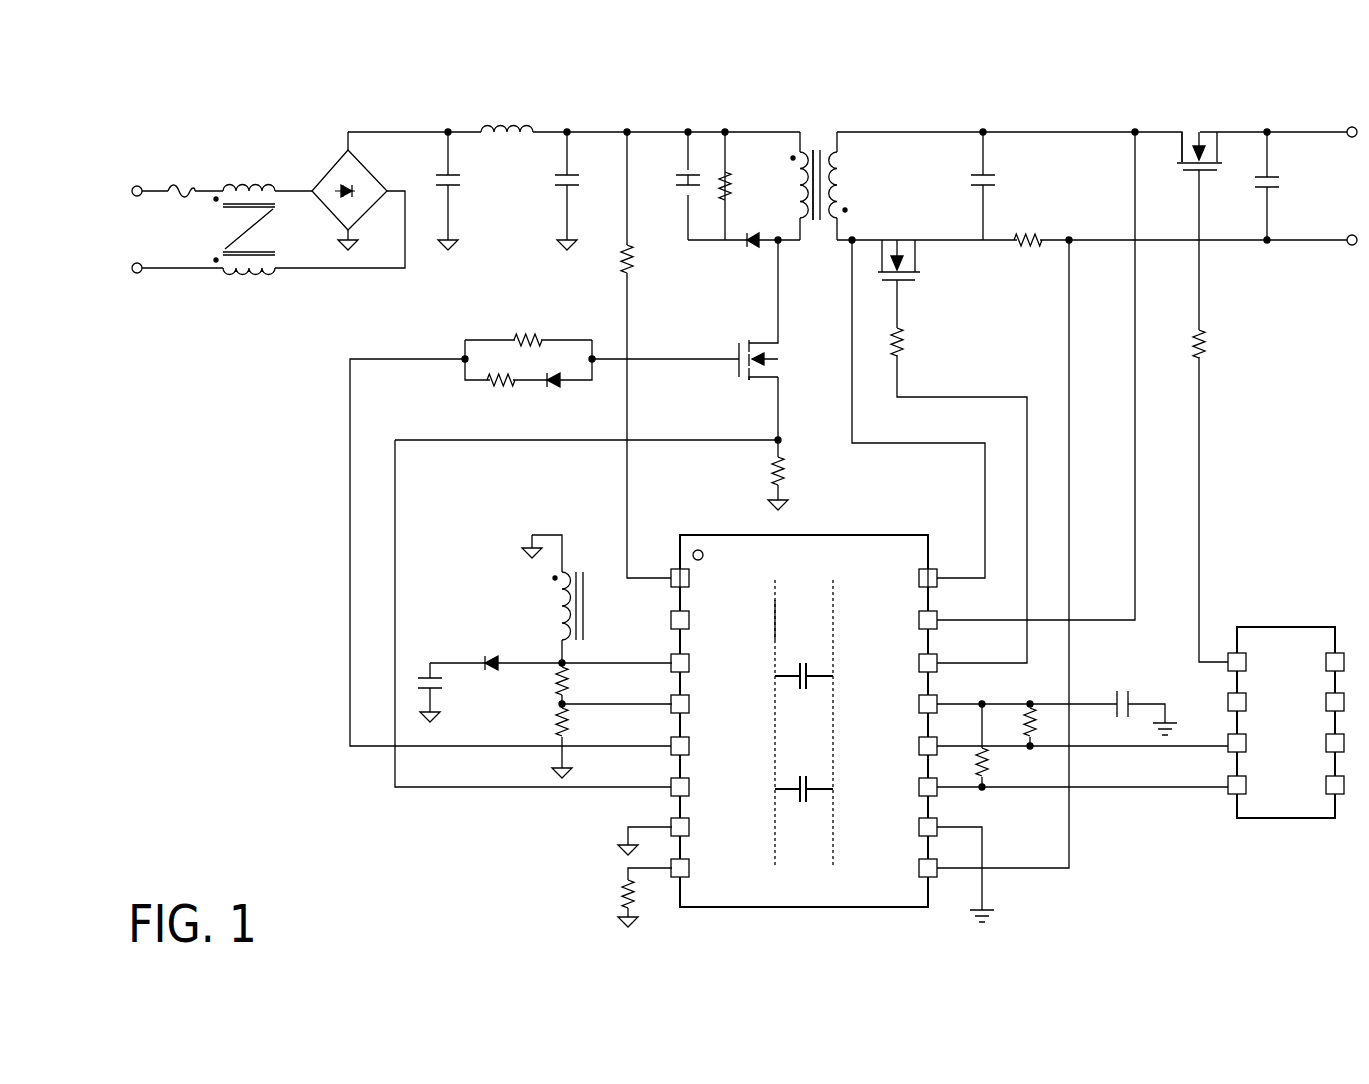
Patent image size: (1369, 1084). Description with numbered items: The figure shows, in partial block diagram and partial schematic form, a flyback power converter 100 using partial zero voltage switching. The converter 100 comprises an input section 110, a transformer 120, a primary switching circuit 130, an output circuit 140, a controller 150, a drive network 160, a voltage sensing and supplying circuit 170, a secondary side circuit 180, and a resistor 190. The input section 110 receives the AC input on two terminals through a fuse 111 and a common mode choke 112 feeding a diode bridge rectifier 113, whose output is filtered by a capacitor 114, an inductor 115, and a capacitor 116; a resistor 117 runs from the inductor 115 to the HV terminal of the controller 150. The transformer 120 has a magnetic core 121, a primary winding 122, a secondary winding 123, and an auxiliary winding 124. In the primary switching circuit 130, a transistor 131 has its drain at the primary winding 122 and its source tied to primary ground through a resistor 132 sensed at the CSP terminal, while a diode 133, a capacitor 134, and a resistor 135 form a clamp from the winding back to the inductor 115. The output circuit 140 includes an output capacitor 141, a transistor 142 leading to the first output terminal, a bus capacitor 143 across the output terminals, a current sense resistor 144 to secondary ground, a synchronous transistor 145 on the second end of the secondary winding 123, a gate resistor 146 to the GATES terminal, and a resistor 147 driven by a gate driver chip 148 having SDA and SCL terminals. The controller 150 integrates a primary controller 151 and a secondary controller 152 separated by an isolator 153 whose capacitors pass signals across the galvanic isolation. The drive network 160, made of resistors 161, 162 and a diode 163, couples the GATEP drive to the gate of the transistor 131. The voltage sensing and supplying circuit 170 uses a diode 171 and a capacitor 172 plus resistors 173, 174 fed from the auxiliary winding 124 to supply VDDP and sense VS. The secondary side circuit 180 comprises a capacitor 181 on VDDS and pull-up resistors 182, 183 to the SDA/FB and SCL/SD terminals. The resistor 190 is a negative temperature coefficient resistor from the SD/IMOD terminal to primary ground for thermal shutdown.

The flyback power converter 100 is at (158, 113).
The input section 110 is at (85, 218).
The fuse 111 is at (185, 186).
The common mode choke 112 is at (258, 186).
The diode bridge rectifier 113 is at (338, 166).
The capacitor 114 is at (465, 184).
The inductor 115 is at (508, 127).
The capacitor 116 is at (553, 190).
The resistor 117 is at (640, 255).
The transformer 120 is at (810, 92).
The magnetic core 121 is at (818, 143).
The primary winding 122 is at (795, 180).
The secondary winding 123 is at (840, 193).
The auxiliary winding 124 is at (556, 600).
The primary switching circuit 130 is at (700, 108).
The transistor 131 is at (783, 365).
The resistor 132 is at (792, 472).
The diode 133 is at (750, 251).
The capacitor 134 is at (680, 186).
The resistor 135 is at (733, 190).
The output circuit 140 is at (957, 110).
The output capacitor 141 is at (998, 189).
The transistor 142 is at (1190, 130).
The bus capacitor 143 is at (1282, 190).
The resistor 144 is at (1030, 251).
The transistor 145 is at (889, 238).
The resistor 146 is at (912, 345).
The resistor 147 is at (1212, 345).
The gate driver chip 148 is at (1278, 625).
The controller 150 is at (800, 908).
The primary controller 151 is at (732, 540).
The secondary controller 152 is at (880, 555).
The isolator 153 is at (802, 570).
The drive network 160 is at (475, 312).
The resistor 161 is at (528, 333).
The resistor 162 is at (500, 393).
The diode 163 is at (553, 393).
The voltage sensing and supplying circuit 170 is at (455, 592).
The diode 171 is at (492, 657).
The capacitor 172 is at (445, 687).
The resistor 173 is at (552, 682).
The resistor 174 is at (573, 722).
The secondary side circuit 180 is at (1145, 675).
The capacitor 181 is at (1120, 688).
The resistor 182 is at (1000, 765).
The resistor 183 is at (1042, 722).
The resistor 190 is at (615, 898).